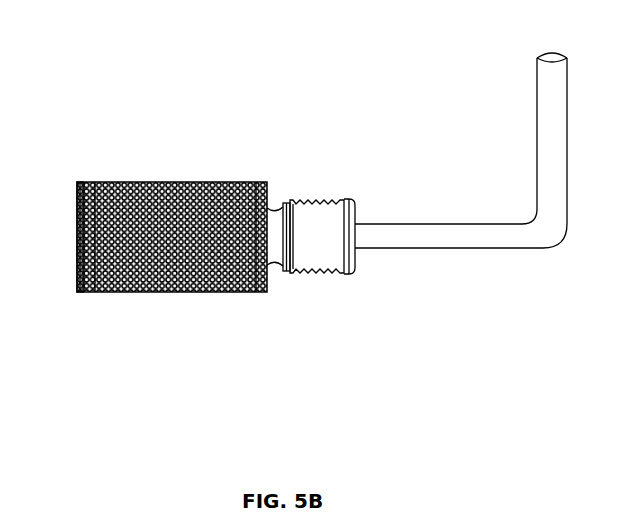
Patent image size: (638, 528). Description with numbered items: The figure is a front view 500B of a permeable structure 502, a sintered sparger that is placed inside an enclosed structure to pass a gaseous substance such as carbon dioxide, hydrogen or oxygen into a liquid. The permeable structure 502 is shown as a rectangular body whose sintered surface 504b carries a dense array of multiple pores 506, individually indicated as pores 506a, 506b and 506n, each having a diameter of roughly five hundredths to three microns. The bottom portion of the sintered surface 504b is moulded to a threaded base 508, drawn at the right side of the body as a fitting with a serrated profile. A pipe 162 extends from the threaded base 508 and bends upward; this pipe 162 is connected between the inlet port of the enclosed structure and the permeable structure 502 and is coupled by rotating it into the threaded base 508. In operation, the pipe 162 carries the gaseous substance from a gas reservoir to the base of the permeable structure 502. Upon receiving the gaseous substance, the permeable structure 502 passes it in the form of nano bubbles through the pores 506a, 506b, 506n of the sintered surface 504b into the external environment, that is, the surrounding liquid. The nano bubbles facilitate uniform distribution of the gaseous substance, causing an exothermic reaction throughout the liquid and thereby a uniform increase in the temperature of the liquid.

The front view 500B is at (199, 330).
The permeable structure 502 is at (145, 292).
The sintered surface 504b is at (85, 292).
The pore 506 is at (77, 237).
The pore 506a is at (85, 182).
The pore 506b is at (95, 182).
The pore 506n is at (256, 292).
The threaded base 508 is at (337, 200).
The pipe 162 is at (537, 136).